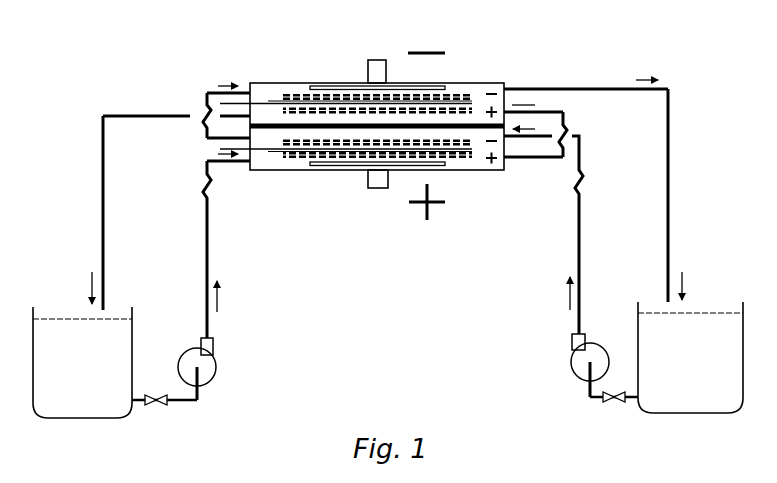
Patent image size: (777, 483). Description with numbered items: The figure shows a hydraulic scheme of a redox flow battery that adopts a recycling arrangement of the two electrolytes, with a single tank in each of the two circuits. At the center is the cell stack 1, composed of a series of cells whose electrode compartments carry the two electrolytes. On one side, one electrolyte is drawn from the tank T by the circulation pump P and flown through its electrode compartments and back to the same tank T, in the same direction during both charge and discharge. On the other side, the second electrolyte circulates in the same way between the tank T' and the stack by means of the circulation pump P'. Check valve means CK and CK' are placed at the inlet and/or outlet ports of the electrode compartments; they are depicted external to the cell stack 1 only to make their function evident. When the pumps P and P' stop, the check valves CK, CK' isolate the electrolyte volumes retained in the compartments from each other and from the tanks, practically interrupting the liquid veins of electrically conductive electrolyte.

The cell stack 1 is at (362, 102).
The tank T is at (82, 362).
The circulation pump P is at (207, 369).
The check valve means CK is at (192, 215).
The tank T' is at (690, 357).
The circulation pump P' is at (578, 365).
The check valve means CK' is at (585, 223).